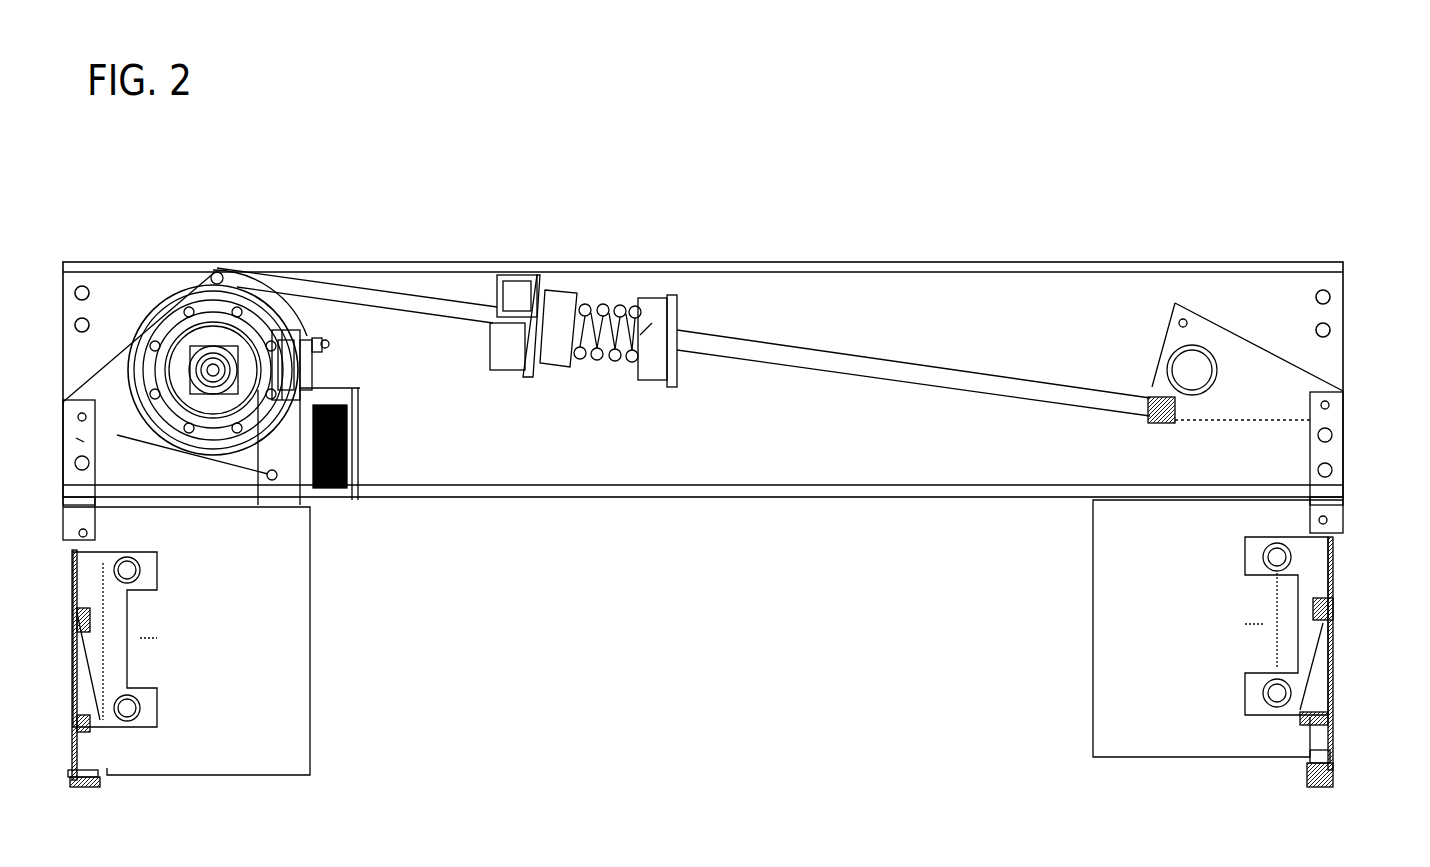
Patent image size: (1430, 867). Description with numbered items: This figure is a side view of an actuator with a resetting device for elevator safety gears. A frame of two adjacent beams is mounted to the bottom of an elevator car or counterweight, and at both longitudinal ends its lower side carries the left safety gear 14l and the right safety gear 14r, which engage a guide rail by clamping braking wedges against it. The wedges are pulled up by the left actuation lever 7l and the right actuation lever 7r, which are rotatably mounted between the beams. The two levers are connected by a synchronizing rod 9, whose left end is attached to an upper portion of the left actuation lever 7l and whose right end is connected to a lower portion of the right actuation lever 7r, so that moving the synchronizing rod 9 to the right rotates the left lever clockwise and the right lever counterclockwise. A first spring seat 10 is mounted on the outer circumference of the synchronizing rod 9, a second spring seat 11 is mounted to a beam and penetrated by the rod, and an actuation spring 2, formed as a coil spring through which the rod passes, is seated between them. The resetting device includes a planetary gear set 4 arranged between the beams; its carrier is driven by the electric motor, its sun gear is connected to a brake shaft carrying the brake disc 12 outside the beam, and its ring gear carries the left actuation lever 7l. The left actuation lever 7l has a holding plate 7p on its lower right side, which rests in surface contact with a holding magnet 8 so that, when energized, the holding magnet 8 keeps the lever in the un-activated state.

The actuation spring 2 is at (613, 353).
The planetary gear set 4 is at (170, 313).
The left actuation lever 7l is at (117, 435).
The right actuation lever 7r is at (1273, 400).
The holding plate 7p is at (338, 498).
The holding magnet 8 is at (360, 465).
The synchronizing rod 9 is at (888, 370).
The first spring seat 10 is at (652, 323).
The second spring seat 11 is at (535, 280).
The brake disc 12 is at (328, 346).
The left safety gear 14l is at (275, 590).
The right safety gear 14r is at (1127, 622).